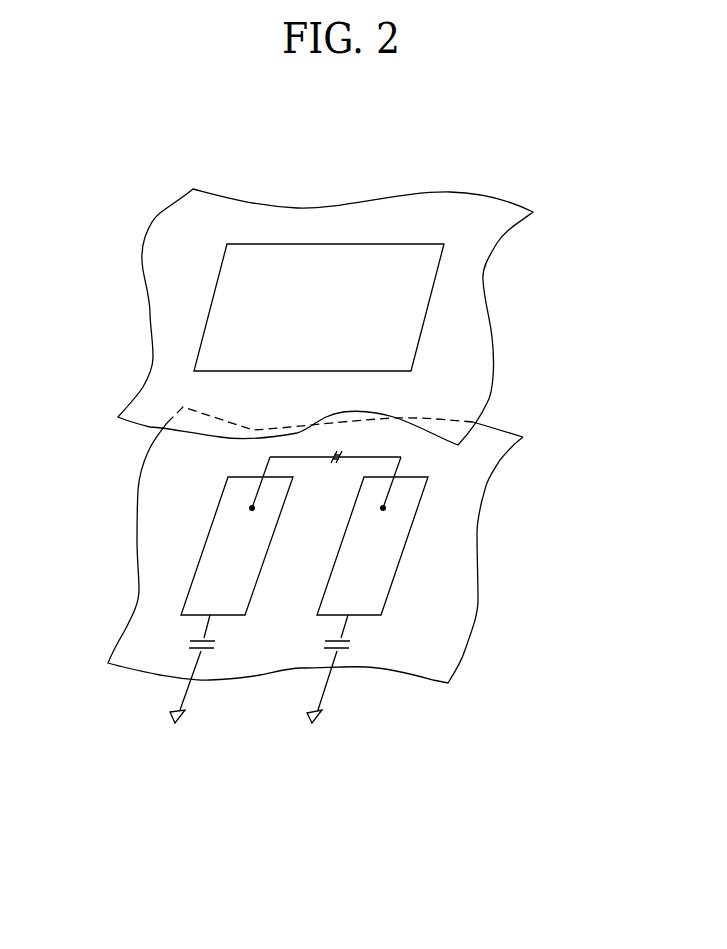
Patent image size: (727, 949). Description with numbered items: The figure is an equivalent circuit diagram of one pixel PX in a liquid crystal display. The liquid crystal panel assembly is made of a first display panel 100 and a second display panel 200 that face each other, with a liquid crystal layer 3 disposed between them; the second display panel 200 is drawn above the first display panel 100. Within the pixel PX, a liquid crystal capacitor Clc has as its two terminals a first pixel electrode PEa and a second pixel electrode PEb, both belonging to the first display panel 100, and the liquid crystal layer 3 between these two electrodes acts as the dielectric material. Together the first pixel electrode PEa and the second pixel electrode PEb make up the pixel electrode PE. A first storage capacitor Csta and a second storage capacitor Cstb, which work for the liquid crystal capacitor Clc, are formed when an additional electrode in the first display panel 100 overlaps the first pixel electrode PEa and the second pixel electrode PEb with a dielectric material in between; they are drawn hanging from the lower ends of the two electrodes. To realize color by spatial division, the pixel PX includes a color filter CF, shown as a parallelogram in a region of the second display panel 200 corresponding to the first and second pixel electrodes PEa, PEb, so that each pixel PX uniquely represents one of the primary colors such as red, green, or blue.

The liquid crystal layer 3 is at (98, 470).
The second display panel 200 is at (493, 372).
The first display panel 100 is at (482, 502).
The color filter CF is at (437, 282).
The pixel PX is at (244, 734).
The pixel electrode PE is at (560, 545).
The first pixel electrode PEa is at (272, 543).
The second pixel electrode PEb is at (392, 588).
The liquid crystal capacitor Clc is at (335, 471).
The first storage capacitor Csta is at (179, 669).
The second storage capacitor Cstb is at (352, 669).